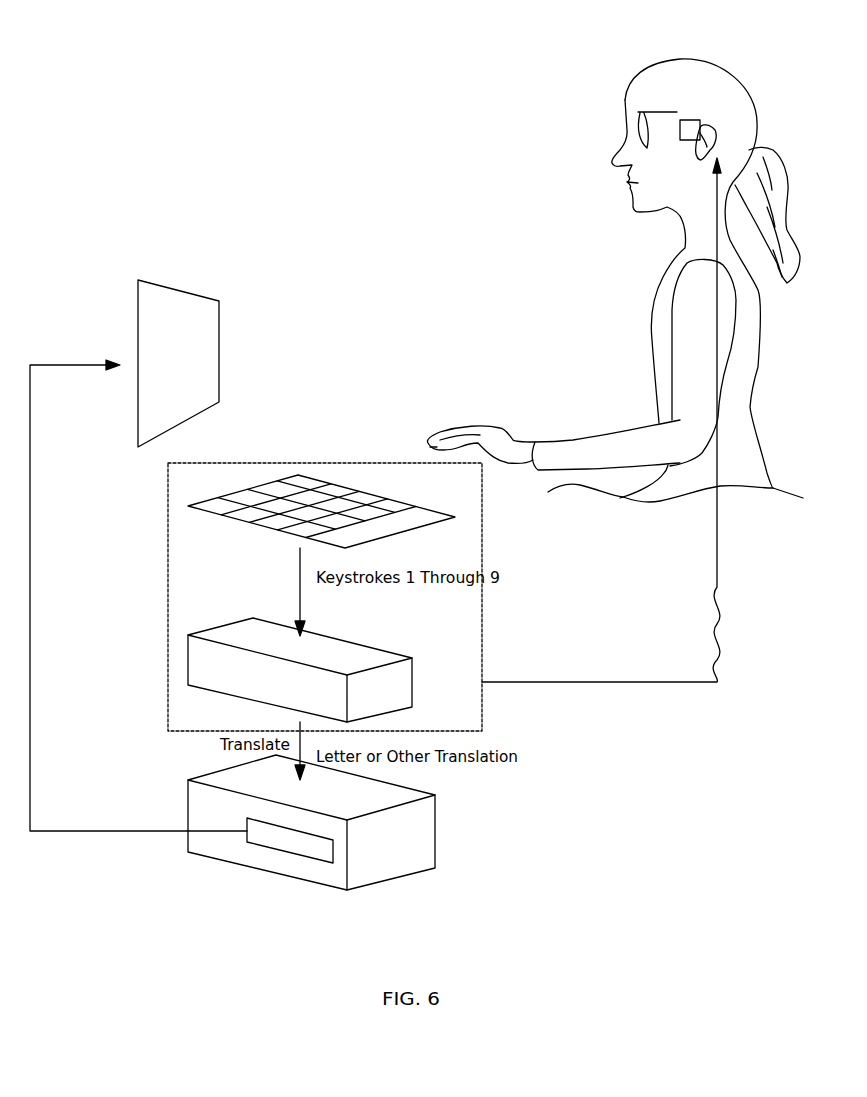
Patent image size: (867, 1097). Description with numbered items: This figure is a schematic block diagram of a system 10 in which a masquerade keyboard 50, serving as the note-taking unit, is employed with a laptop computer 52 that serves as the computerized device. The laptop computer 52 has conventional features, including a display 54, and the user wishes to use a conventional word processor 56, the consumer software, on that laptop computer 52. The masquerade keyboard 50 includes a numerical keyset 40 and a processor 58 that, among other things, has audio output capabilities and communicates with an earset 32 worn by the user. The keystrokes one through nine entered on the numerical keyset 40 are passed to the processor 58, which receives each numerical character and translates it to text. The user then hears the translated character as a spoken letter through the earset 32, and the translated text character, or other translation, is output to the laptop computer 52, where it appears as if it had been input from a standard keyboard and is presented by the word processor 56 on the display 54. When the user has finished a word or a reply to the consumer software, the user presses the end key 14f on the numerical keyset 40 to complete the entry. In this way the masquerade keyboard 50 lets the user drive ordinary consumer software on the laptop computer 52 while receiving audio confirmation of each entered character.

The text entry system 10 is at (437, 243).
The earset 32 is at (689, 133).
The display 54 is at (168, 364).
The masquerade keyboard 50 is at (152, 597).
The end key 14f is at (405, 526).
The numerical keyset 40 is at (253, 522).
The processor 58 is at (269, 688).
The laptop computer 52 is at (402, 858).
The word processor 56 is at (307, 858).